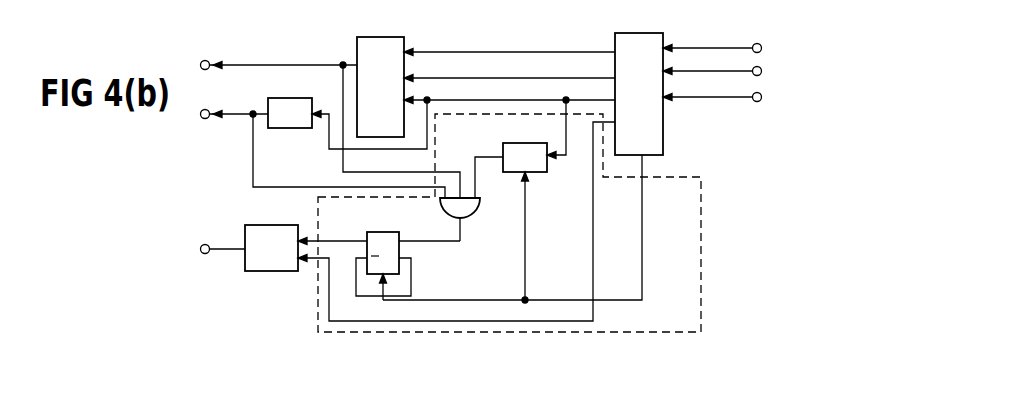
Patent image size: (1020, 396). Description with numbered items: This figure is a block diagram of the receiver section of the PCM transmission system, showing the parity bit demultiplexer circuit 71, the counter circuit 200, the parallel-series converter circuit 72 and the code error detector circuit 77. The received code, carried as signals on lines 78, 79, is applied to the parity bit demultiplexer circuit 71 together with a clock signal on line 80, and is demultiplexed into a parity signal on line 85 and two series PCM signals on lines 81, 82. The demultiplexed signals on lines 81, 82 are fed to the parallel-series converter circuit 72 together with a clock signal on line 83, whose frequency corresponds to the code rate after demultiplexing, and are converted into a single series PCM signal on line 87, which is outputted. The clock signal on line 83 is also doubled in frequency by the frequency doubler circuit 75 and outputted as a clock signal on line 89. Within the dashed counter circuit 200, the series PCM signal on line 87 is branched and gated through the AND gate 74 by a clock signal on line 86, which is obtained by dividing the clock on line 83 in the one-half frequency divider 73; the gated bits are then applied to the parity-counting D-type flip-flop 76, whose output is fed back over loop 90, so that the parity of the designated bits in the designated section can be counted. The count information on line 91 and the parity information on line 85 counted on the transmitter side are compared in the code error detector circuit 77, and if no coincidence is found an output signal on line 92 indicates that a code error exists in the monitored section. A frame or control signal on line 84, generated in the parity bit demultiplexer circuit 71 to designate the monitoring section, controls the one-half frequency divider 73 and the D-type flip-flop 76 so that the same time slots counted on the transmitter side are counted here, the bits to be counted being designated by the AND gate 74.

The parity bit demultiplexer circuit 71 is at (636, 33).
The parallel-series converter circuit 72 is at (384, 37).
The ½ frequency divider 73 is at (548, 173).
The AND gate 74 is at (477, 206).
The frequency doubler circuit 75 is at (292, 97).
The parity-counting D-type flip-flop 76 is at (384, 231).
The code error detector circuit 77 is at (258, 272).
The line 78 is at (694, 48).
The line 79 is at (696, 71).
The line 80 is at (696, 97).
The line 81 is at (540, 51).
The line 82 is at (542, 77).
The line 83 is at (505, 99).
The line 84 is at (643, 230).
The line 85 is at (593, 230).
The line 86 is at (486, 152).
The line 87 is at (249, 65).
The line 89 is at (230, 113).
The feedback line 90 is at (428, 242).
The line 91 is at (332, 241).
The line 92 is at (232, 244).
The counter circuit 200 is at (703, 238).